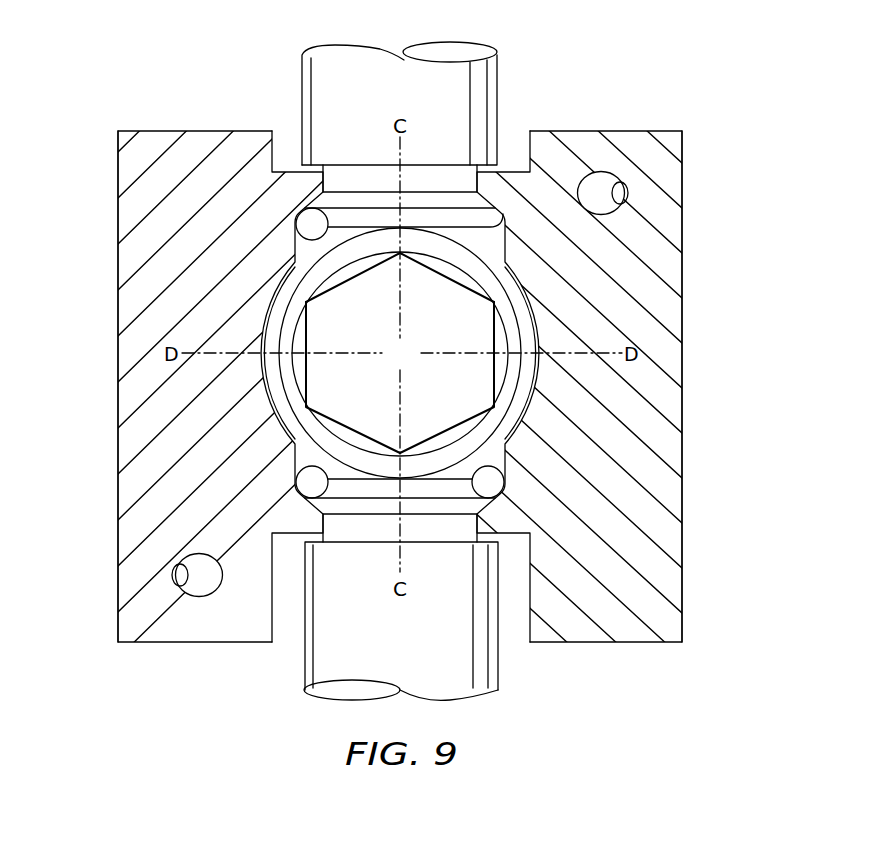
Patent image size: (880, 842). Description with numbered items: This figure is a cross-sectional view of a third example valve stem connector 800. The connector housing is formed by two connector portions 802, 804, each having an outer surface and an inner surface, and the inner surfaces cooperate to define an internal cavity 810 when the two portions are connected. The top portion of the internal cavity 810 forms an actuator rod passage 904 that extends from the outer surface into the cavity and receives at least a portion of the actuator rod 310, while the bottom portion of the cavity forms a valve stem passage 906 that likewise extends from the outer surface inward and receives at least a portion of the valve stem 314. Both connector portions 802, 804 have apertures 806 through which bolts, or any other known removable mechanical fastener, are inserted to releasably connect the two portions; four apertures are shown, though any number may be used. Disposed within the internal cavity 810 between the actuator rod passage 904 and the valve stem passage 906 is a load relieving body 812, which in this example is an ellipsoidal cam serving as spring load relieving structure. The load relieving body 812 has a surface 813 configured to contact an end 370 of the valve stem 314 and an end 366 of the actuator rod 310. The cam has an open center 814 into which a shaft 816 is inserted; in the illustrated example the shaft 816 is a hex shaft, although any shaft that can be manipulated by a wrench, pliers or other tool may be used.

The stem connector 800 is at (166, 65).
The connector portion 802 is at (118, 372).
The connector portion 804 is at (682, 383).
The apertures 806 is at (626, 200).
The actuator rod 310 is at (302, 95).
The valve stem 314 is at (303, 665).
The actuator rod passage 904 is at (512, 132).
The valve stem passage 906 is at (513, 635).
The end of the actuator rod 366 is at (296, 233).
The end of the valve stem 370 is at (296, 470).
The internal cavity 810 is at (506, 472).
The load relieving body 812 is at (505, 252).
The surface 813 is at (478, 436).
The open center 814 is at (447, 272).
The shaft 816 is at (420, 367).